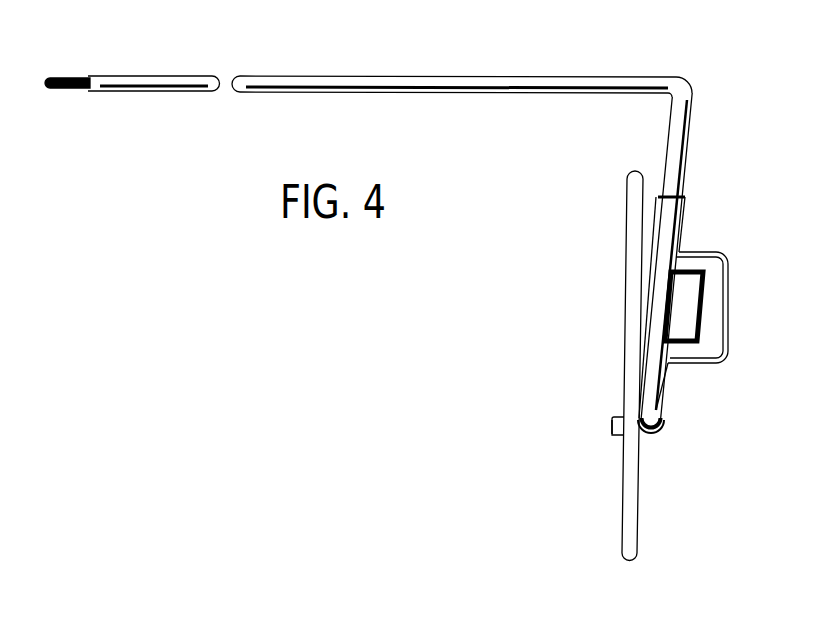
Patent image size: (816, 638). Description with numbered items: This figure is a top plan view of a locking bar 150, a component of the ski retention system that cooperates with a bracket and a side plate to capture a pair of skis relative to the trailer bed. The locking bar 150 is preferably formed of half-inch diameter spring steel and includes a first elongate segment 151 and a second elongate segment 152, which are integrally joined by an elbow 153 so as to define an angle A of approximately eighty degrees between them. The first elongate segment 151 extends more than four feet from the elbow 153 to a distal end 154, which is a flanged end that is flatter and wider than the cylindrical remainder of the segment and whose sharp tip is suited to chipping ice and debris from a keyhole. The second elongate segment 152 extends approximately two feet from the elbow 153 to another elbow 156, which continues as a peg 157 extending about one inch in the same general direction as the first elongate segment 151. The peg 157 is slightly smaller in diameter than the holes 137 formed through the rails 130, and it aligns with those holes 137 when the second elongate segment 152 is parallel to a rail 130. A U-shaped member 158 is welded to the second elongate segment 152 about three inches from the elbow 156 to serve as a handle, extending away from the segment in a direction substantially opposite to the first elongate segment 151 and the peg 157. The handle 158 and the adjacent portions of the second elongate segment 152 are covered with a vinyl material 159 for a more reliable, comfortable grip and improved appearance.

The rail 130 is at (622, 500).
The hole 137 is at (617, 436).
The locking bar 150 is at (408, 220).
The first elongate segment 151 is at (337, 100).
The second elongate segment 152 is at (694, 115).
The elbow 153 is at (690, 78).
The distal end 154 is at (80, 92).
The elbow 156 is at (722, 308).
The peg 157 is at (610, 422).
The U-shaped member 158 is at (731, 320).
The vinyl material 159 is at (685, 208).
The angle A is at (660, 145).